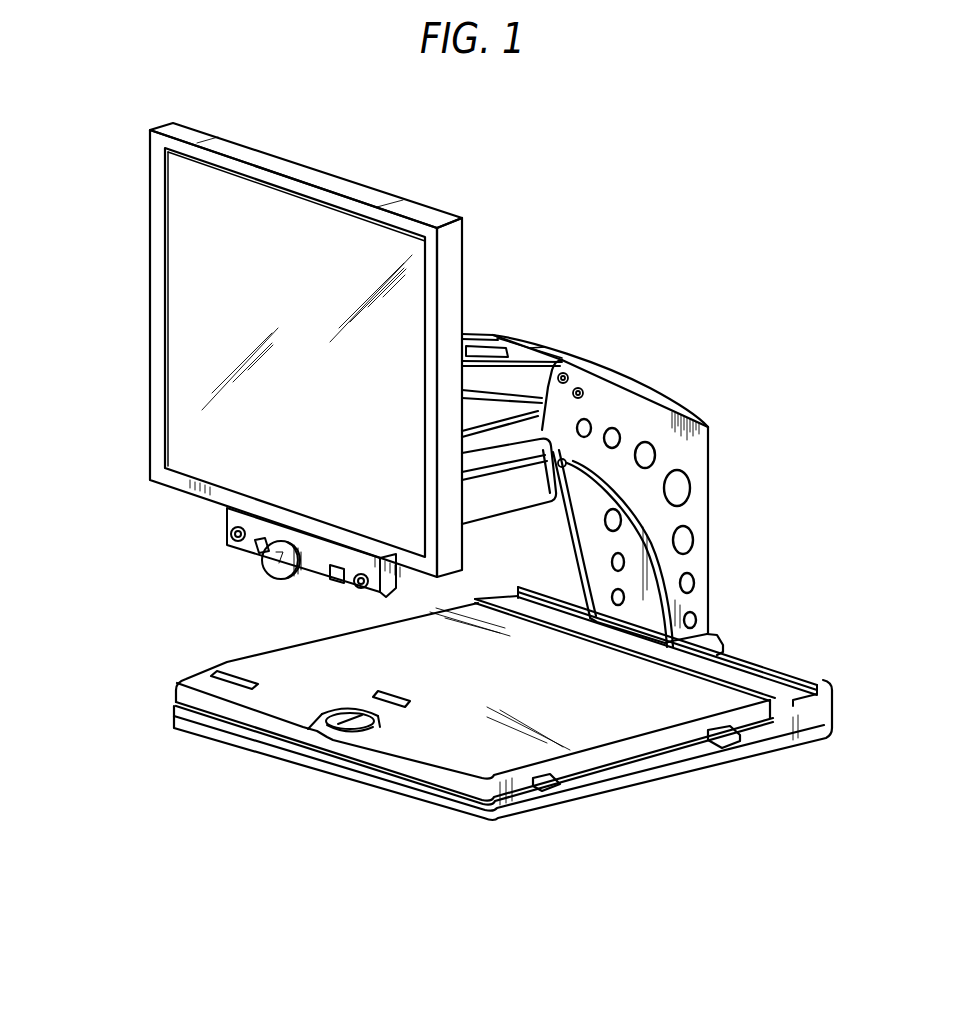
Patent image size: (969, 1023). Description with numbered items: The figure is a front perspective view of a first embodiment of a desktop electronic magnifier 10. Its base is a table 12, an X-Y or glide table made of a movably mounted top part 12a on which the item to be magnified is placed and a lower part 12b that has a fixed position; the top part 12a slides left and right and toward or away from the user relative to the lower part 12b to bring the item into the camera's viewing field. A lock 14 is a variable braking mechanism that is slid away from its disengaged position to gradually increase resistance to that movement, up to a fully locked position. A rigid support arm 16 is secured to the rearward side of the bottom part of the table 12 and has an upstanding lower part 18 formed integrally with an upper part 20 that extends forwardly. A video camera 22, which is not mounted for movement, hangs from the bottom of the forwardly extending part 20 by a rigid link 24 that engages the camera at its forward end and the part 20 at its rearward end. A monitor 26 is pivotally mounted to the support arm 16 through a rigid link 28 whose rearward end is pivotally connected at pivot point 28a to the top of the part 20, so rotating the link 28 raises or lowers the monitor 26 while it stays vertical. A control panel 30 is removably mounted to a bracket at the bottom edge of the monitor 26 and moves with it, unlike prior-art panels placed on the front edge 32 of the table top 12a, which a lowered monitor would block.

The desktop electronic magnifier 10 is at (630, 181).
The table 12 is at (746, 787).
The top part 12a is at (294, 658).
The lower part 12b is at (603, 780).
The lock 14 is at (303, 708).
The rigid support arm 16 is at (701, 513).
The upstanding lower part 18 is at (697, 573).
The upper part 20 is at (622, 402).
The video camera 22 is at (491, 496).
The rigid link 24 is at (640, 489).
The monitor 26 is at (136, 378).
The rigid link 28 is at (486, 376).
The rearward pivot point 28a is at (568, 378).
The control panel 30 is at (251, 564).
The front edge 32 is at (418, 772).